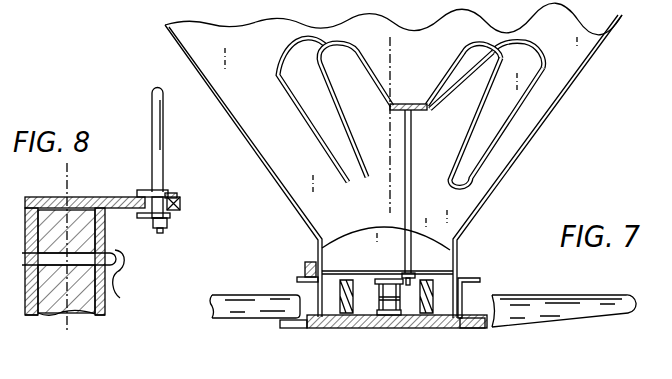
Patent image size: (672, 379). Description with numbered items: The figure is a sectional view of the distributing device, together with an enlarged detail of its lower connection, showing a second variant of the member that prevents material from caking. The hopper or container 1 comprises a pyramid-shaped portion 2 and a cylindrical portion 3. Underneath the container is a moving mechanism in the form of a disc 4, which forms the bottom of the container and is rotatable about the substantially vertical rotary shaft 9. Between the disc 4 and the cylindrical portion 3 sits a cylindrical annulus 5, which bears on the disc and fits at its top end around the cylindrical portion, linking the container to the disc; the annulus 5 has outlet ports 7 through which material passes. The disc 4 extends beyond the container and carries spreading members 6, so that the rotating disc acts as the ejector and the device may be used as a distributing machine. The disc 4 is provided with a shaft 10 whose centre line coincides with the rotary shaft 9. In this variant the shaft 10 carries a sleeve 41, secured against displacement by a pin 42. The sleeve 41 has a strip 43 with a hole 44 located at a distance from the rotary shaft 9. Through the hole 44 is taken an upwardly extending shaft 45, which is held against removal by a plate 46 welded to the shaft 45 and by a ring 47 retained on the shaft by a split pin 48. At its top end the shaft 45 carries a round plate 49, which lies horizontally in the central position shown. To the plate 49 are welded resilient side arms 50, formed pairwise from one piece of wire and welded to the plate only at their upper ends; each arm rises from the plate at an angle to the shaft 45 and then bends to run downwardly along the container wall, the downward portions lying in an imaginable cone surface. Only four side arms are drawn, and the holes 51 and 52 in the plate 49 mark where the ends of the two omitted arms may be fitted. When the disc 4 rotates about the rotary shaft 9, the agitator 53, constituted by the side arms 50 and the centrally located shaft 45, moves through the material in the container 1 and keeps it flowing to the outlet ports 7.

In FIG. 7, the hopper or container 1 is at (266, 164).
In FIG. 7, the pyramid-shaped portion 2 is at (513, 166).
In FIG. 7, the cylindrical portion 3 is at (457, 254).
In FIG. 7, the disc 4 is at (472, 319).
In FIG. 7, the cylindrical annulus 5 is at (315, 298).
In FIG. 7, the spreading members 6 is at (240, 308).
In FIG. 7, the outlet ports 7 is at (343, 294).
In FIG. 7, the rotary shaft 9 is at (390, 196).
In FIG. 8, the rotary shaft 9 is at (67, 174).
In FIG. 7, the shaft 10 is at (384, 316).
In FIG. 8, the shaft 10 is at (68, 313).
In FIG. 7, the sleeve 41 is at (395, 320).
In FIG. 8, the sleeve 41 is at (100, 297).
In FIG. 7, the pin 42 is at (380, 293).
In FIG. 8, the pin 42 is at (117, 248).
In FIG. 7, the strip 43 is at (390, 271).
In FIG. 8, the strip 43 is at (112, 197).
In FIG. 8, the hole 44 is at (182, 206).
In FIG. 7, the shaft 45 is at (412, 208).
In FIG. 8, the shaft 45 is at (153, 132).
In FIG. 8, the plate 46 is at (173, 190).
In FIG. 8, the ring 47 is at (146, 217).
In FIG. 8, the split pin 48 is at (160, 234).
In FIG. 7, the round plate 49 is at (411, 103).
In FIG. 7, the side arms 50 is at (300, 114).
In FIG. 7, the hole 51 is at (422, 114).
In FIG. 7, the hole 52 is at (391, 115).
In FIG. 7, the agitator 53 is at (459, 158).